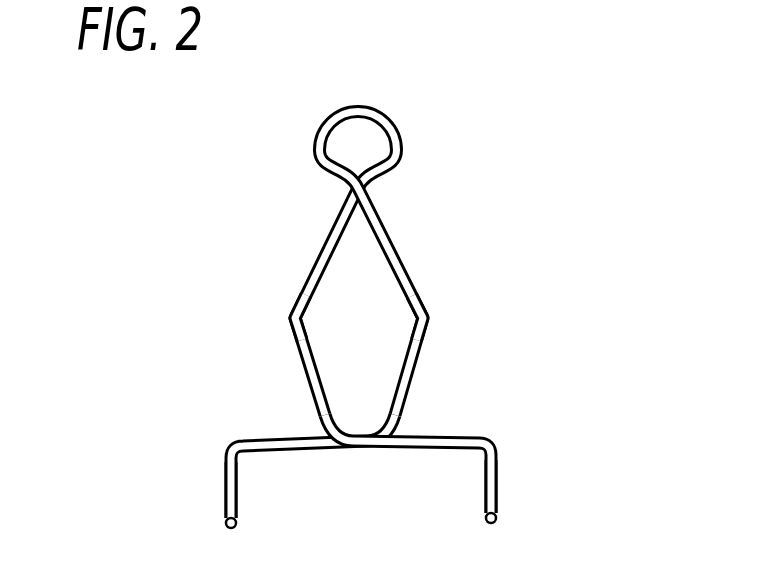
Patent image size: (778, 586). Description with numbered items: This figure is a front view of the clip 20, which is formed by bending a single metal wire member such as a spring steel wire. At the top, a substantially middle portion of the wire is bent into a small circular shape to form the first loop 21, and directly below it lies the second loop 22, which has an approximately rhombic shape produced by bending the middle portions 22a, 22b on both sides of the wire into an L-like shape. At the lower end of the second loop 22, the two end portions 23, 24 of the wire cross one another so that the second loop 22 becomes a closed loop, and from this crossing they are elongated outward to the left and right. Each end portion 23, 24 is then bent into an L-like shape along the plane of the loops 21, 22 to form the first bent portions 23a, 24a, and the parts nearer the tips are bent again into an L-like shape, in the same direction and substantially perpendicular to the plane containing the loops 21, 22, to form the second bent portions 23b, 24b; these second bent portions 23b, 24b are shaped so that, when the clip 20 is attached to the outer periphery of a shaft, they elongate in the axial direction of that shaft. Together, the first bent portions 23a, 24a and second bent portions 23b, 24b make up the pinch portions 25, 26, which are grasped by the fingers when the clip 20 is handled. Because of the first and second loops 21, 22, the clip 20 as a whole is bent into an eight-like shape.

The clip 20 is at (216, 204).
The first loop 21 is at (408, 119).
The second loop 22 is at (416, 225).
The middle portion 22a is at (431, 316).
The middle portion 22b is at (290, 315).
The end portion 23 is at (258, 437).
The first bent portion 23a is at (222, 485).
The second bent portion 23b is at (230, 528).
The end portion 24 is at (437, 437).
The first bent portion 24a is at (498, 463).
The second bent portion 24b is at (490, 524).
The pinch portion 25 is at (83, 450).
The pinch portion 26 is at (625, 445).